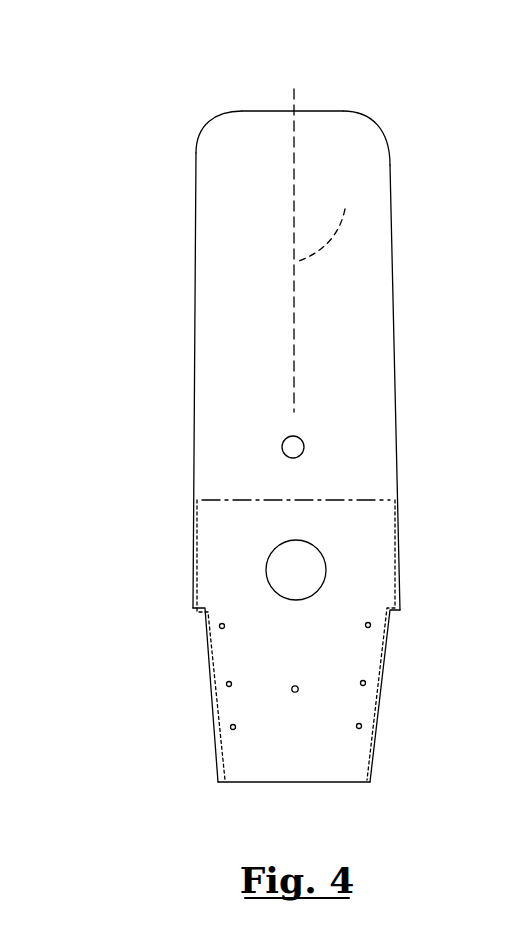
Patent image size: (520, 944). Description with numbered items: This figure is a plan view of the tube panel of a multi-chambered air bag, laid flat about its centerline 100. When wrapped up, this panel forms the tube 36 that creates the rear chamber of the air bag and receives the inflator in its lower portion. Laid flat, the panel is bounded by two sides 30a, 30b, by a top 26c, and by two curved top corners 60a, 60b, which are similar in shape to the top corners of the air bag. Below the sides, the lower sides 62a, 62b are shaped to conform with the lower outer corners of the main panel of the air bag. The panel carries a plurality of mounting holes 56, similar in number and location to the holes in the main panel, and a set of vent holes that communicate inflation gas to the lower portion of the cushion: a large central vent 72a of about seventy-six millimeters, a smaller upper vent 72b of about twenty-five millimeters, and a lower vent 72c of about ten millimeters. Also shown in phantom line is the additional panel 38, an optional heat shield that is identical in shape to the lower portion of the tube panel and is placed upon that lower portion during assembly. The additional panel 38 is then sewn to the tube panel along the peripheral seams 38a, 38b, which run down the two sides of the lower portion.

The top 26c is at (318, 118).
The side 30a is at (210, 425).
The side 30b is at (370, 452).
The tube 36 is at (366, 348).
The additional panel 38 is at (358, 499).
The peripheral seam 38a is at (193, 586).
The peripheral seam 38b is at (400, 587).
The mounting holes 56 is at (224, 629).
The curved corner 60a is at (216, 141).
The curved corner 60b is at (360, 127).
The lower side 62a is at (233, 702).
The lower side 62b is at (363, 707).
The large central vent 72a is at (292, 557).
The upper vent 72b is at (305, 447).
The lower vent 72c is at (296, 693).
The centerline 100 is at (329, 222).